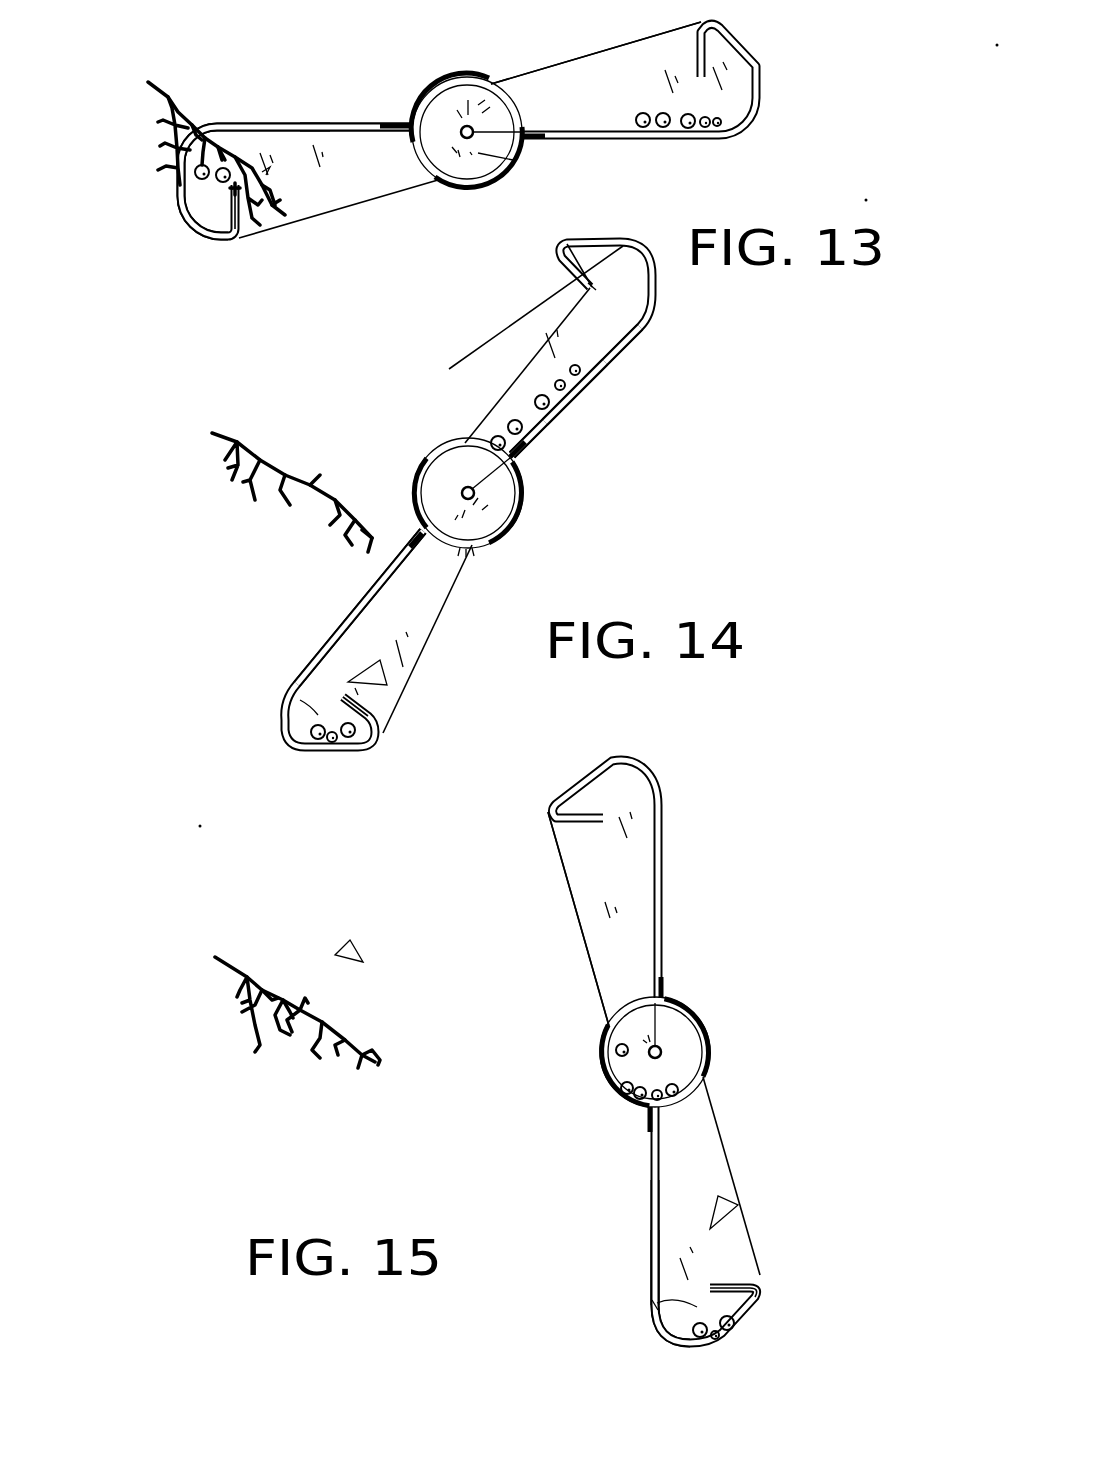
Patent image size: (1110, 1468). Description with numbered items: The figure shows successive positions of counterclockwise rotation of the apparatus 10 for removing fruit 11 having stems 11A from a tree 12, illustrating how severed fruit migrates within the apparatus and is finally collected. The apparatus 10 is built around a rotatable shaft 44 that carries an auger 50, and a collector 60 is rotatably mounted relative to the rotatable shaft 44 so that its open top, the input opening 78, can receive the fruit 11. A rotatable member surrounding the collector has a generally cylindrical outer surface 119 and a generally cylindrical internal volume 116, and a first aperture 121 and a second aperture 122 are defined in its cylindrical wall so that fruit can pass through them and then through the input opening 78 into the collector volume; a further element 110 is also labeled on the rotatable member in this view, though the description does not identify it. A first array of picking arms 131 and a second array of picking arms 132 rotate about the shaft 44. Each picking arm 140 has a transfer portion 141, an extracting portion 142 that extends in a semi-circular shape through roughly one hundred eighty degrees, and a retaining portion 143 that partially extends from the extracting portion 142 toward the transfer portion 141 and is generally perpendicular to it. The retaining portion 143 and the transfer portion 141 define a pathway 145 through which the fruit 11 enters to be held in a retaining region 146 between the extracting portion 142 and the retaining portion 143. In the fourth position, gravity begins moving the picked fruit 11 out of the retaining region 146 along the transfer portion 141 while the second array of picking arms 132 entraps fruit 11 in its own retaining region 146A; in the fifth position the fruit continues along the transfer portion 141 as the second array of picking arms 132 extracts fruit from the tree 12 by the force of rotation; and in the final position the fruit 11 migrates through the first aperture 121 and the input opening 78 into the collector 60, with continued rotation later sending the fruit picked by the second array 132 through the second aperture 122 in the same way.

In FIG. 15, the apparatus 10 is at (357, 958).
In FIG. 13, the fruit 11 is at (187, 212).
In FIG. 14, the fruit 11 is at (603, 367).
In FIG. 15, the fruit 11 is at (733, 1328).
In FIG. 13, the stems 11A is at (190, 117).
In FIG. 15, the stems 11A is at (290, 1035).
In FIG. 13, the tree 12 is at (172, 110).
In FIG. 15, the tree 12 is at (247, 975).
In FIG. 13, the rotatable shaft 44 is at (522, 140).
In FIG. 14, the rotatable shaft 44 is at (482, 507).
In FIG. 15, the rotatable shaft 44 is at (658, 1049).
In FIG. 13, the auger 50 is at (513, 160).
In FIG. 13, the collector 60 is at (478, 105).
In FIG. 14, the collector 60 is at (518, 503).
In FIG. 15, the collector 60 is at (672, 1000).
In FIG. 13, the input opening 78 is at (445, 77).
In FIG. 14, the input opening 78 is at (440, 455).
In FIG. 15, the input opening 78 is at (688, 1053).
In FIG. 13, the disk lower portion 110 is at (458, 187).
In FIG. 13, the generally cylindrical internal volume 116 is at (470, 93).
In FIG. 14, the generally cylindrical internal volume 116 is at (500, 535).
In FIG. 15, the generally cylindrical internal volume 116 is at (685, 1033).
In FIG. 13, the generally cylindrical outer surface 119 is at (412, 112).
In FIG. 14, the generally cylindrical outer surface 119 is at (420, 470).
In FIG. 15, the generally cylindrical outer surface 119 is at (703, 1072).
In FIG. 13, the first aperture 121 is at (510, 100).
In FIG. 14, the first aperture 121 is at (468, 493).
In FIG. 15, the first aperture 121 is at (635, 1008).
In FIG. 13, the second aperture 122 is at (423, 163).
In FIG. 14, the second aperture 122 is at (470, 560).
In FIG. 15, the second aperture 122 is at (690, 1095).
In FIG. 13, the first array of picking arms 131 is at (675, 137).
In FIG. 14, the first array of picking arms 131 is at (588, 378).
In FIG. 15, the first array of picking arms 131 is at (662, 850).
In FIG. 13, the second array of picking arms 132 is at (243, 128).
In FIG. 14, the second array of picking arms 132 is at (308, 648).
In FIG. 15, the second array of picking arms 132 is at (652, 1242).
In FIG. 13, the picking arm 140 is at (300, 123).
In FIG. 14, the picking arm 140 is at (545, 430).
In FIG. 15, the picking arm 140 is at (653, 1150).
In FIG. 14, the transfer portion 141 is at (553, 440).
In FIG. 13, the extracting portion 142 is at (345, 123).
In FIG. 14, the extracting portion 142 is at (340, 618).
In FIG. 15, the extracting portion 142 is at (652, 1197).
In FIG. 13, the retaining portion 143 is at (255, 205).
In FIG. 14, the retaining portion 143 is at (623, 248).
In FIG. 15, the retaining portion 143 is at (745, 1283).
In FIG. 13, the pathway 145 is at (270, 168).
In FIG. 14, the pathway 145 is at (388, 668).
In FIG. 15, the pathway 145 is at (738, 1200).
In FIG. 13, the retaining region 146 is at (223, 203).
In FIG. 14, the retaining region 146 is at (612, 265).
In FIG. 14, the retaining region 146A is at (320, 710).
In FIG. 15, the retaining region 146A is at (655, 1307).